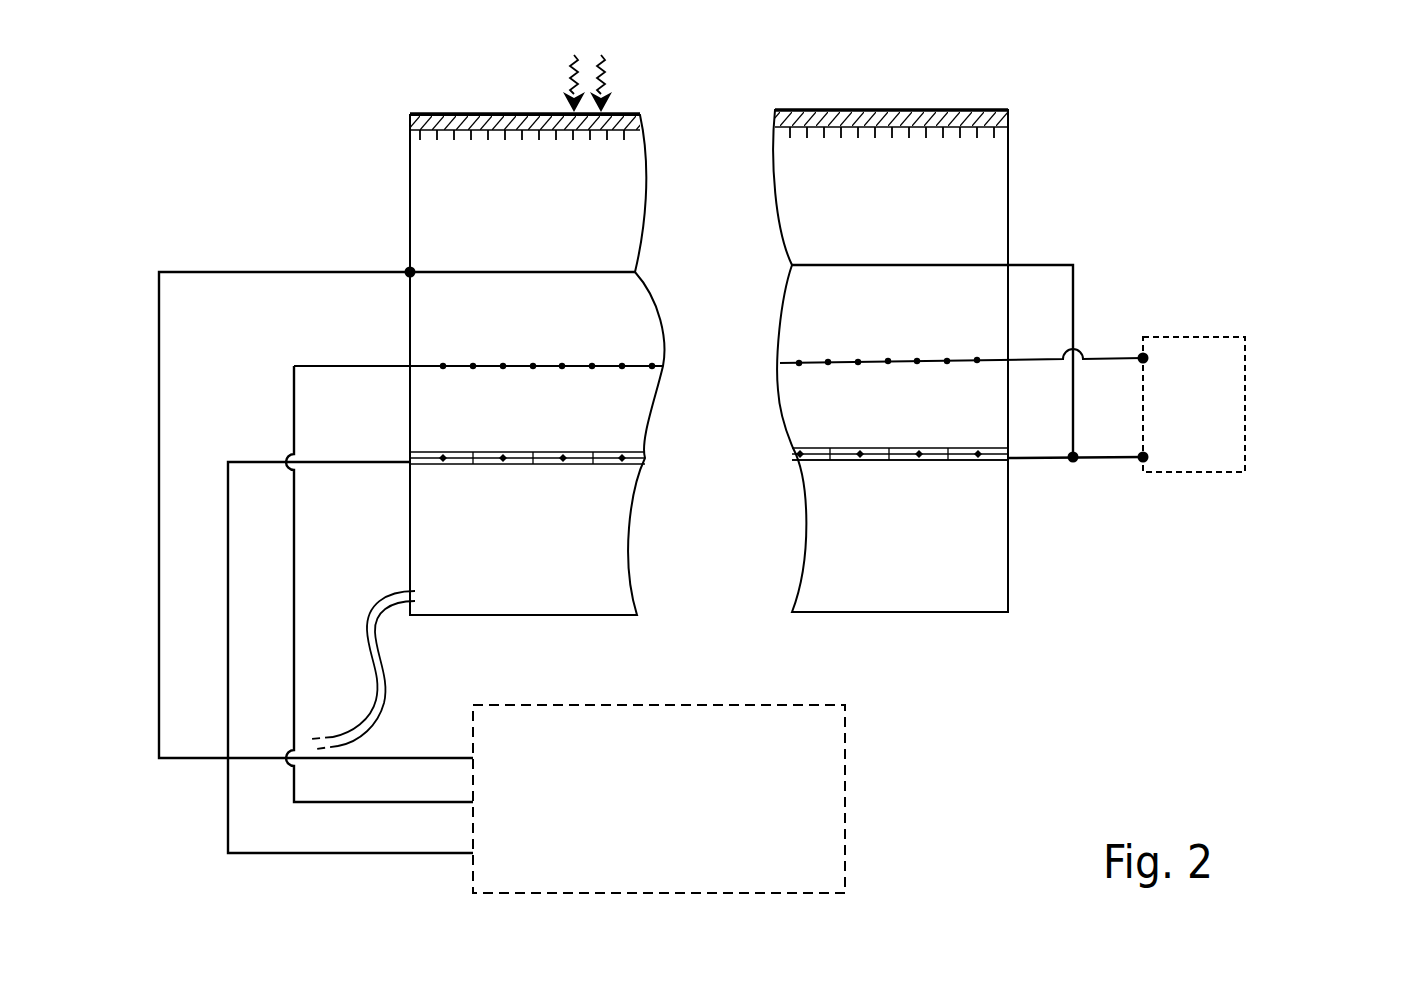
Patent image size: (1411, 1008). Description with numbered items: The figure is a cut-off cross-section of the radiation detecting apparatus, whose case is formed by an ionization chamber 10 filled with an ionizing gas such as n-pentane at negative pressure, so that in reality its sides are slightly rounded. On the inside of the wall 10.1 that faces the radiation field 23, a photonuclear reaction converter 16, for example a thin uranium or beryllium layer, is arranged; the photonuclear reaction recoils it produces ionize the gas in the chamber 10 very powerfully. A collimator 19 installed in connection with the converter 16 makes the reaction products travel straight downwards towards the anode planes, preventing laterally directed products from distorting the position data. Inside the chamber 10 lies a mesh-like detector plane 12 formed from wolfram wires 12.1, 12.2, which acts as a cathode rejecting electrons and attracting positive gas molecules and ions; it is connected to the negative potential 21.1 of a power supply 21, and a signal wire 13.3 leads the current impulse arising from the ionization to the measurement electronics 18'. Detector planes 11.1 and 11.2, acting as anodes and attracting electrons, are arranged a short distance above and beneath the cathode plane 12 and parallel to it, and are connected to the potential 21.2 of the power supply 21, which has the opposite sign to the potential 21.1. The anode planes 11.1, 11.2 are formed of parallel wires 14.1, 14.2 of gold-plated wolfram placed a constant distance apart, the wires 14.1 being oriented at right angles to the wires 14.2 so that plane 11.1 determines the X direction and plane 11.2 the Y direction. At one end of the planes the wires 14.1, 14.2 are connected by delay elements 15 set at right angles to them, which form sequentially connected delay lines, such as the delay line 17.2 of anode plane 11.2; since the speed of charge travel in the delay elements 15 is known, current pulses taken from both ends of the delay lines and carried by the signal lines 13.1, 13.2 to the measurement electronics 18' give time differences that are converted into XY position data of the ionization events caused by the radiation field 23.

The ionization chamber 10 is at (975, 370).
The wall 10.1 is at (857, 110).
The detector plane 11.1 is at (520, 263).
The detector plane 11.2 is at (937, 478).
The detector plane 12 is at (570, 378).
The wire 12.1 is at (967, 358).
The wire 12.2 is at (565, 365).
The signal line 13.1 is at (378, 275).
The signal line 13.2 is at (247, 460).
The signal wire 13.3 is at (293, 498).
The wires 14.1 is at (570, 270).
The wires 14.2 is at (843, 462).
The delay elements 15 is at (605, 472).
The photonuclear reaction converter 16 is at (977, 115).
The delay line 17.2 is at (907, 468).
The measurement electronics 18' is at (755, 799).
The collimator 19 is at (385, 688).
The power supply 21 is at (1085, 412).
The negative potential 21.1 is at (1150, 345).
The potential 21.2 is at (1147, 460).
The radiation field 23 is at (614, 80).